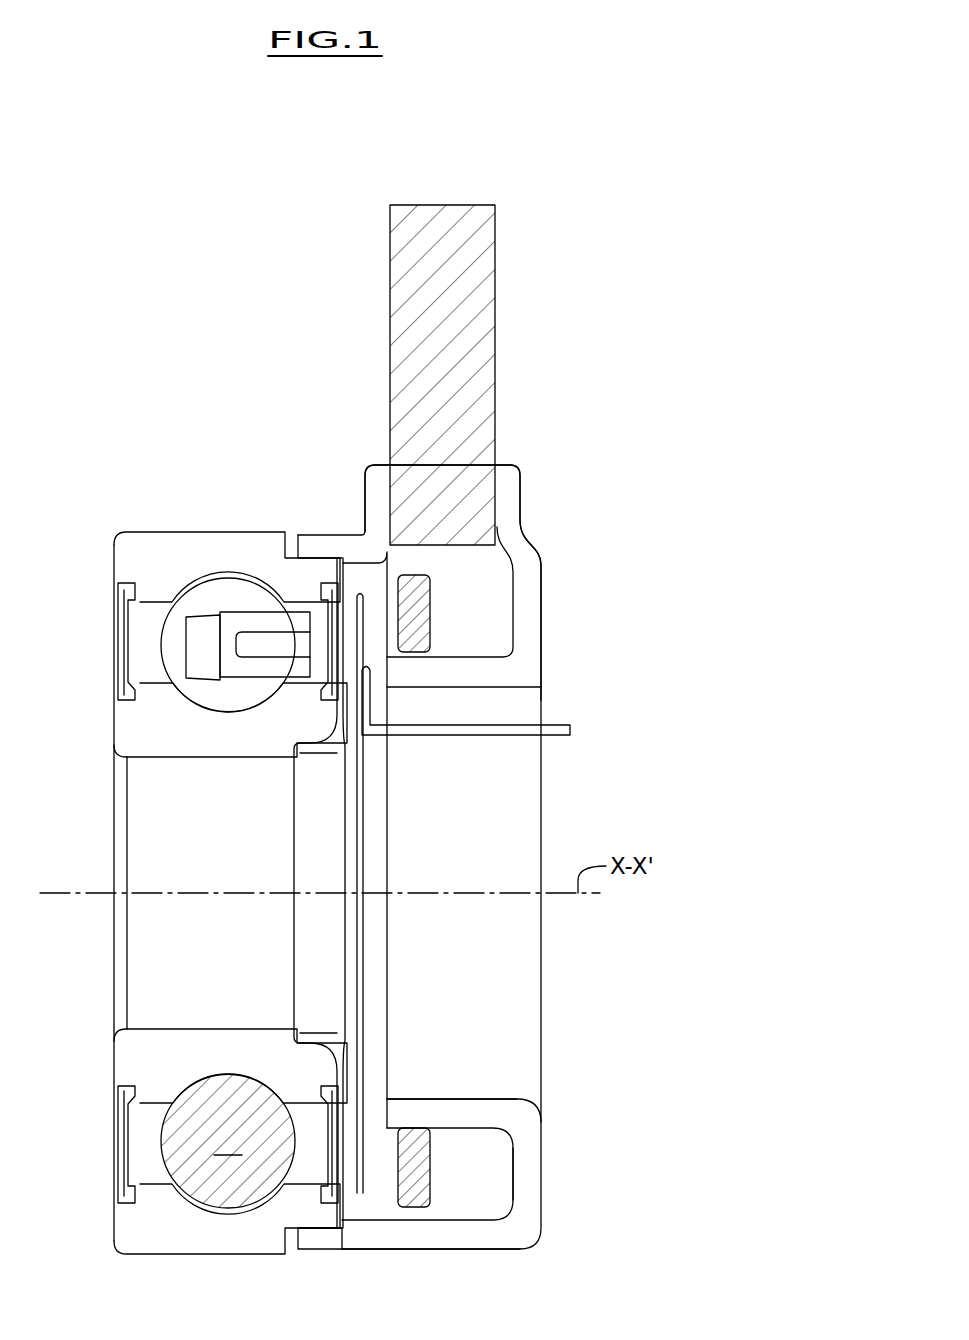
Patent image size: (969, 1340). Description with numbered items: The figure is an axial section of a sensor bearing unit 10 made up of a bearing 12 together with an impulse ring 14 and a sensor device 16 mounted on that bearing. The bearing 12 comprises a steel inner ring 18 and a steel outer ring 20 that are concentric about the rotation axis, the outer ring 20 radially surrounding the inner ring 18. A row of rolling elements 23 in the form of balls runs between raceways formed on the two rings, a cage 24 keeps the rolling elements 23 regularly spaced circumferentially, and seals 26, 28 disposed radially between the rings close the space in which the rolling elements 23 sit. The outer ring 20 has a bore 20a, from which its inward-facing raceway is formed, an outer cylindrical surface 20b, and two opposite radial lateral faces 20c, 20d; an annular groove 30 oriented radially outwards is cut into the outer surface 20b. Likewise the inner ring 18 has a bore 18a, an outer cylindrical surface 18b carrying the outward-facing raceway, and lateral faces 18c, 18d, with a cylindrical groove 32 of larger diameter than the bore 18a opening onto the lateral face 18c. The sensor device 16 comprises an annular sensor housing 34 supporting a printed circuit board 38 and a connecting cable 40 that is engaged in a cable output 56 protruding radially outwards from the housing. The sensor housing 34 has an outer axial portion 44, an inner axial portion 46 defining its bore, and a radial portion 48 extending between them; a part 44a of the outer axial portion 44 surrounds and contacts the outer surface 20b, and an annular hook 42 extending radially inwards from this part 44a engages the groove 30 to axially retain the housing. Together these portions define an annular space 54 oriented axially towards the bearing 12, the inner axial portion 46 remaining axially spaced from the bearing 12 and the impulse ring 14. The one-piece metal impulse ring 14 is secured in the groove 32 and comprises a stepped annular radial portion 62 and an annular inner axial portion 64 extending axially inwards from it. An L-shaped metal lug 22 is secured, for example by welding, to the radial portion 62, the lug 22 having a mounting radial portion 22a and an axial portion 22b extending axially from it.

The sensor bearing unit 10 is at (556, 222).
The bearing 12 is at (135, 502).
The impulse ring 14 is at (541, 676).
The sensor device 16 is at (468, 881).
The inner ring 18 is at (331, 915).
The bore 18a is at (128, 1020).
The outer cylindrical surface 18b is at (118, 1108).
The radial lateral face 18c is at (352, 1070).
The radial lateral face 18d is at (113, 1066).
The outer ring 20 is at (110, 1225).
The bore 20a is at (115, 1172).
The outer cylindrical surface 20b is at (142, 1268).
The radial lateral face 20c is at (345, 1213).
The radial lateral face 20d is at (115, 1208).
The lug 22 is at (508, 732).
The mounting radial portion 22a is at (460, 712).
The axial portion 22b is at (529, 738).
The rolling elements 23 is at (228, 893).
The cage 24 is at (290, 1168).
The seal 26 is at (115, 1145).
The seal 28 is at (312, 1150).
The groove 30 is at (287, 1250).
The cylindrical groove 32 is at (320, 1027).
The sensor housing 34 is at (548, 554).
The printed circuit board 38 is at (420, 602).
The connecting cable 40 is at (492, 296).
The annular hook 42 is at (302, 1245).
The outer axial portion 44 is at (457, 1247).
The part of the outer axial portion 44a is at (328, 1255).
The inner axial portion 46 is at (458, 1113).
The radial portion 48 is at (527, 1173).
The annular space 54 is at (477, 1160).
The cable output 56 is at (518, 490).
The annular radial portion 62 is at (373, 713).
The annular inner axial portion 64 is at (313, 750).